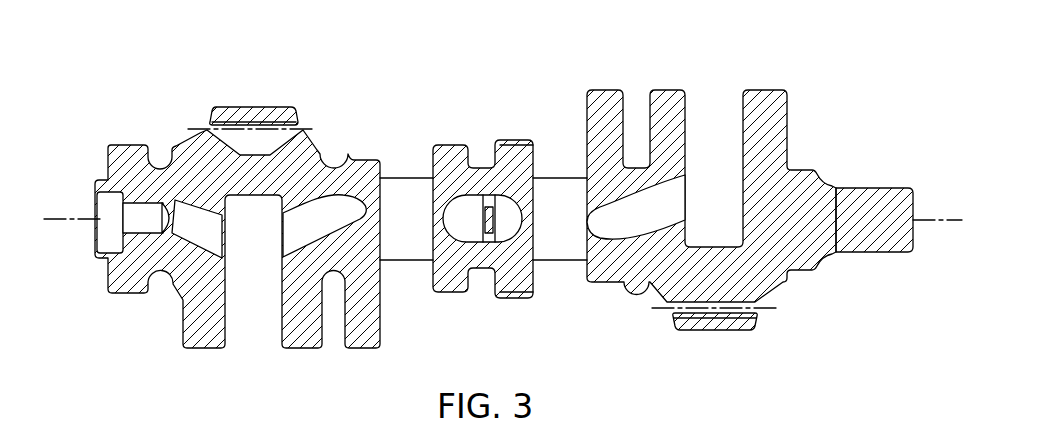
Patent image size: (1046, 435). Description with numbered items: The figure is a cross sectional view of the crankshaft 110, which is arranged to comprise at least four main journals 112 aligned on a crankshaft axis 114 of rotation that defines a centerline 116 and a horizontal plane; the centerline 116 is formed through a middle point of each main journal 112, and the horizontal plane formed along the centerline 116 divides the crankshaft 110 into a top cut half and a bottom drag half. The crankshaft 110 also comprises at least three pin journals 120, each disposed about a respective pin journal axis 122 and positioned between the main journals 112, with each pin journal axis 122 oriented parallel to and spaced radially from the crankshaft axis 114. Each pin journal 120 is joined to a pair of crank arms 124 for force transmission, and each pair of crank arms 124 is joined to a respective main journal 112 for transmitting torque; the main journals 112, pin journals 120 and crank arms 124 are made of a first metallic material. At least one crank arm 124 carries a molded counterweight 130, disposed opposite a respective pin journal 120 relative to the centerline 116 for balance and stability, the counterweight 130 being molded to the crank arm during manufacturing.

The crankshaft 110 is at (141, 47).
The main journal 112 is at (405, 177).
The crankshaft axis 114 is at (55, 228).
The centerline 116 is at (80, 219).
The pin journal 120 is at (238, 111).
The pin journal axis 122 is at (196, 128).
The crank arm 124 is at (600, 283).
The molded counterweight 130 is at (660, 90).